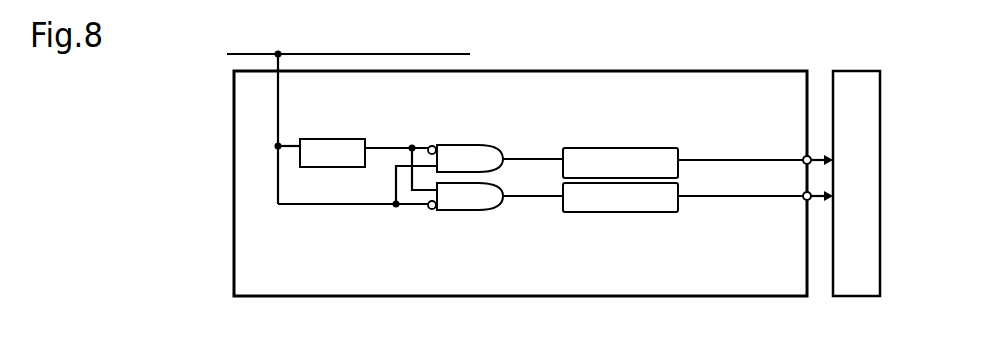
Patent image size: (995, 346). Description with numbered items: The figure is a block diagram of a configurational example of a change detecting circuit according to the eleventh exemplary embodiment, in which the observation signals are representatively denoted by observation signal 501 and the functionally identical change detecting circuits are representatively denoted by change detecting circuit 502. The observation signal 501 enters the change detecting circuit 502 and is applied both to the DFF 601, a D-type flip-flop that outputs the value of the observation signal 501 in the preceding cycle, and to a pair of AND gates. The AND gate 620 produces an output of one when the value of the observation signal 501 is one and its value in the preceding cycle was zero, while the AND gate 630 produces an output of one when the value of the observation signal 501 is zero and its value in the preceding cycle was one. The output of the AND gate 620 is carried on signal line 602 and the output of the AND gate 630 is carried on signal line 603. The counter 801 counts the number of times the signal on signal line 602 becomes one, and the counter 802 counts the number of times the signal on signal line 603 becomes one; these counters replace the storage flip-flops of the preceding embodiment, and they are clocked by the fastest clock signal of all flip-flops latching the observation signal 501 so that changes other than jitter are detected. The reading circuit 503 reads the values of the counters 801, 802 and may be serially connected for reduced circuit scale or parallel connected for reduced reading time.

The observation signal 501 is at (379, 33).
The change detecting circuit 502 is at (520, 165).
The reading circuit 503 is at (858, 157).
The DFF 601 is at (354, 130).
The signal line 602 is at (493, 128).
The signal line 603 is at (472, 222).
The AND gate 620 is at (457, 146).
The AND gate 630 is at (450, 212).
The counter 801 is at (620, 131).
The counter 802 is at (620, 229).